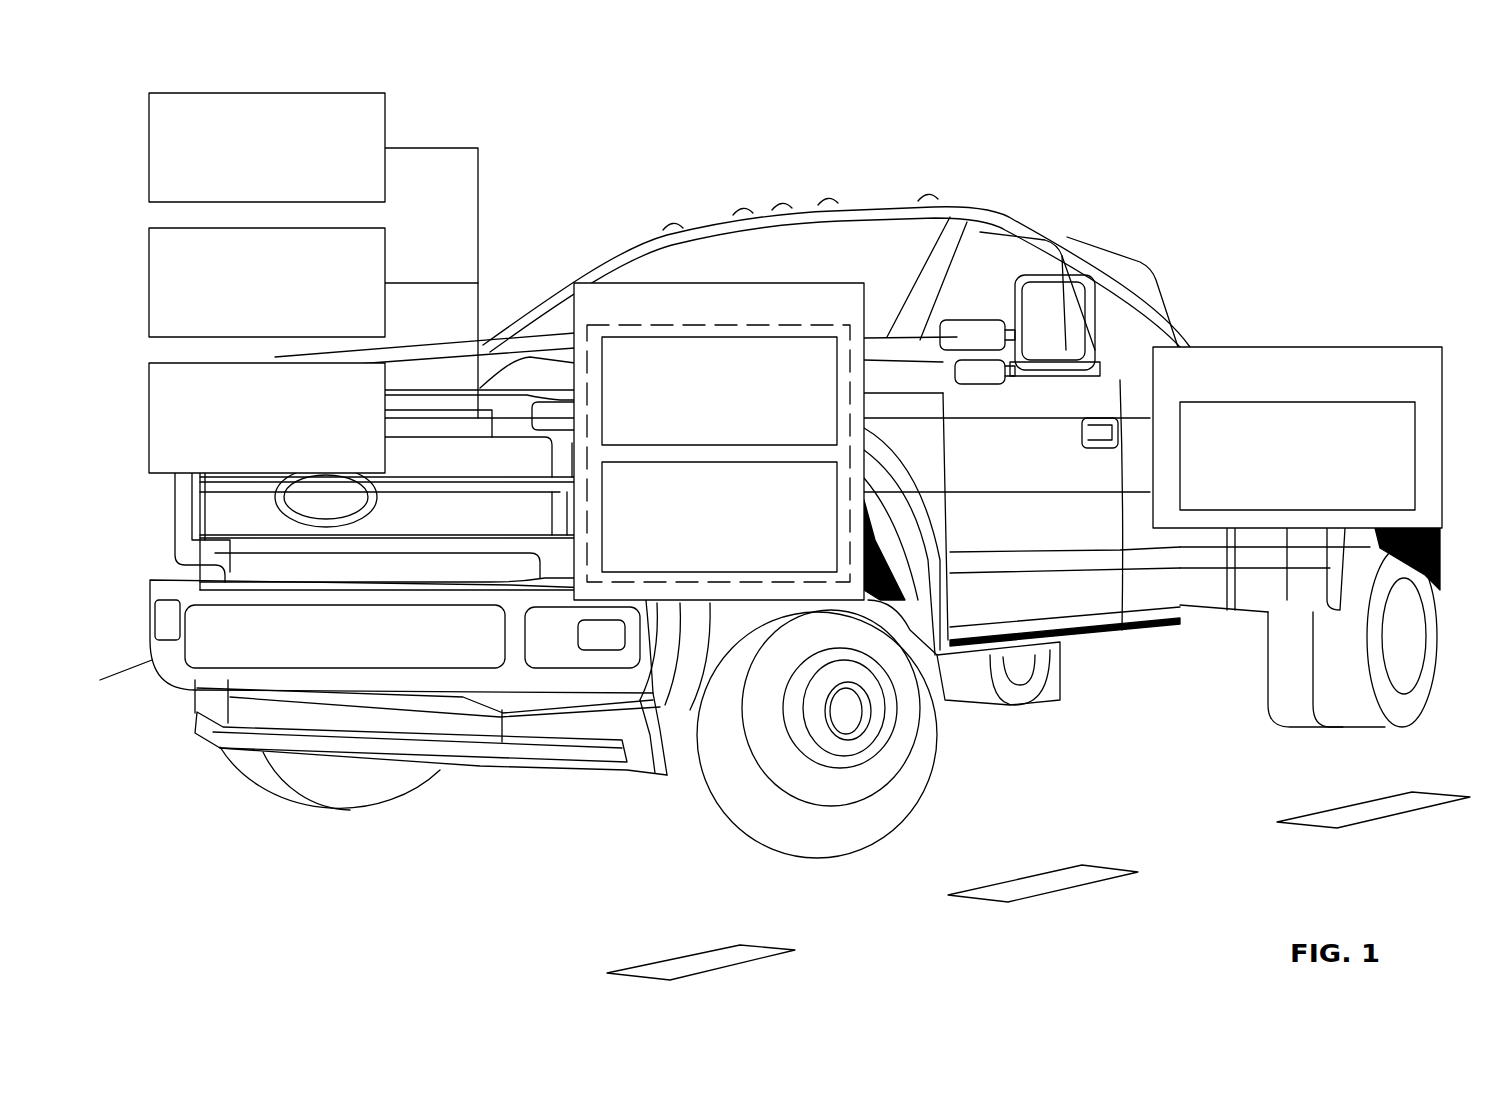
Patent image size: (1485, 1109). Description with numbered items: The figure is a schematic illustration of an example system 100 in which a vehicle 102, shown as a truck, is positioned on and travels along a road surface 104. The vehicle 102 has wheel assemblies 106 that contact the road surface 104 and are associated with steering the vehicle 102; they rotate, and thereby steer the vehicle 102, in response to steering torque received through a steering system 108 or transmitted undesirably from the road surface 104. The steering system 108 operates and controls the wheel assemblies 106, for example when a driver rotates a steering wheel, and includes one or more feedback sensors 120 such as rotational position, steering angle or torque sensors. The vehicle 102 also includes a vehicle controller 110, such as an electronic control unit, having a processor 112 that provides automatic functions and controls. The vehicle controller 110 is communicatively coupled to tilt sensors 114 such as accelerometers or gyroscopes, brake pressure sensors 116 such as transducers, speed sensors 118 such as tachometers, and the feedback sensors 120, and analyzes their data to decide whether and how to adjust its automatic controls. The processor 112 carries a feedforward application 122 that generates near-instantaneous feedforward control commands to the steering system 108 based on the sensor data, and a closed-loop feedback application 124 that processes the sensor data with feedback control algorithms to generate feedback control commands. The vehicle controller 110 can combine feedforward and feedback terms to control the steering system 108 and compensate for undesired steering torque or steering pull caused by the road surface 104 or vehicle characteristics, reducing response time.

The system 100 is at (1272, 136).
The vehicle 102 is at (983, 210).
The road surface 104 is at (335, 953).
The wheel assemblies 106 is at (383, 808).
The steering system 108 is at (1297, 406).
The vehicle controller 110 is at (570, 322).
The processor 112 is at (719, 401).
The tilt sensors 114 is at (183, 363).
The brake pressure sensors 116 is at (183, 228).
The speed sensors 118 is at (183, 93).
The feedback sensors 120 is at (1318, 494).
The feedforward application 122 is at (738, 431).
The feedback application 124 is at (738, 557).